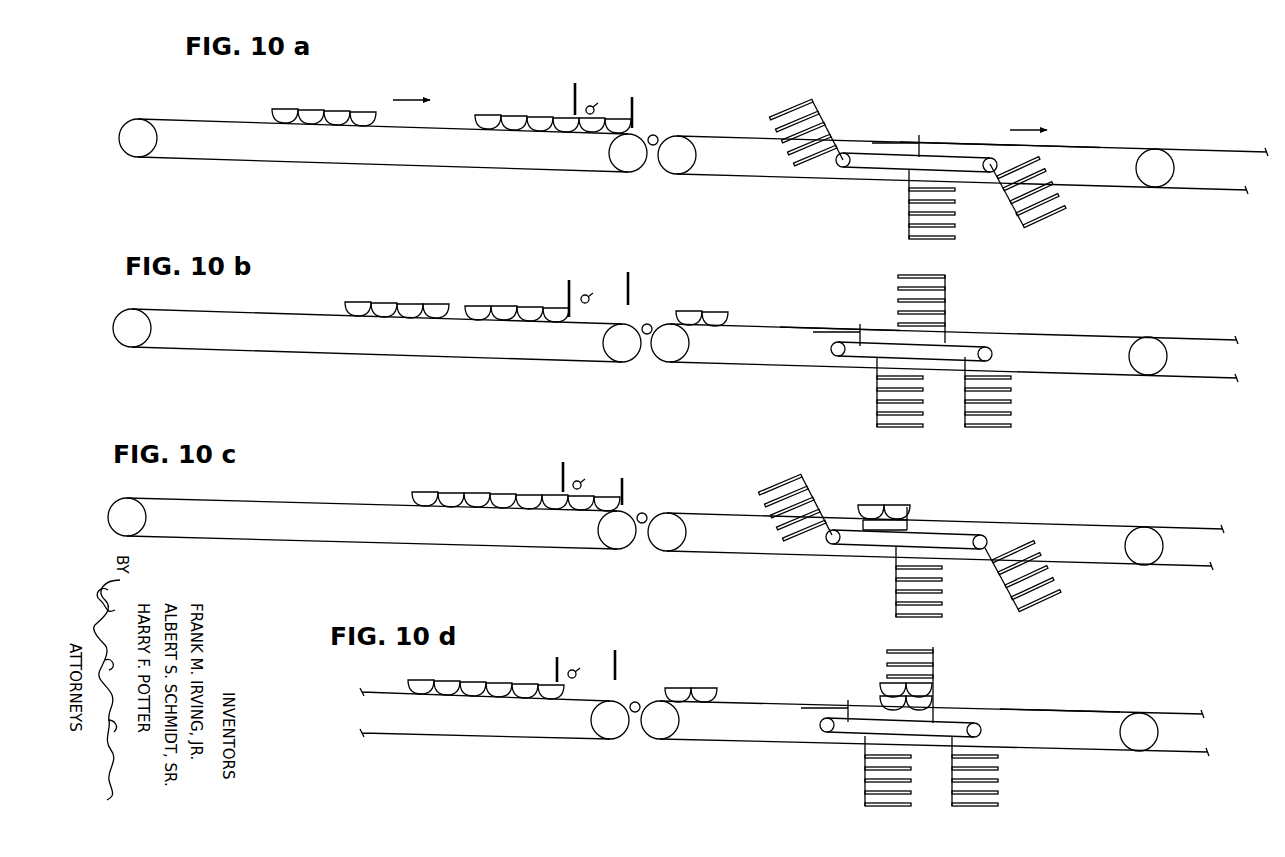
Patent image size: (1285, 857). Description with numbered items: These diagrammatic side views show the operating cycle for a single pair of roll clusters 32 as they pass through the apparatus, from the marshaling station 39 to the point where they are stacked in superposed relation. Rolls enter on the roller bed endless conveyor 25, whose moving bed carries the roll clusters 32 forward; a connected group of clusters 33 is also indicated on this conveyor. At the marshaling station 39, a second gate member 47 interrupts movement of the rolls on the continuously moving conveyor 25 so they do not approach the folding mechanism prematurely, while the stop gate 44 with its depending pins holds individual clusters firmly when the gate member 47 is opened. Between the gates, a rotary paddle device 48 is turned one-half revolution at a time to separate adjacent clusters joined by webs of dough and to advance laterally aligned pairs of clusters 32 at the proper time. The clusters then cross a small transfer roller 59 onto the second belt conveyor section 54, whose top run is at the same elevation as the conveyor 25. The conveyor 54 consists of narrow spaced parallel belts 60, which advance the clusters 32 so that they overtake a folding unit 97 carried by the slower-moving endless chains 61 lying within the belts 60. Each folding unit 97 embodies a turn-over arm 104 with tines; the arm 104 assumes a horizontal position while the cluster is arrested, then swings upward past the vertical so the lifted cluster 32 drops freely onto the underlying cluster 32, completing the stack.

In FIG. 10a, the roller bed endless conveyor 25 is at (218, 118).
In FIG. 10b, the roller bed endless conveyor 25 is at (252, 310).
In FIG. 10c, the roller bed endless conveyor 25 is at (298, 497).
In FIG. 10d, the roller bed endless conveyor 25 is at (494, 713).
In FIG. 10a, the roll cluster 32 is at (335, 107).
In FIG. 10b, the roll cluster 32 is at (718, 312).
In FIG. 10c, the roll cluster 32 is at (607, 496).
In FIG. 10d, the roll cluster 32 is at (520, 682).
In FIG. 10a, the row of containers 33 is at (305, 108).
In FIG. 10a, the marshaling station 39 is at (607, 91).
In FIG. 10a, the stop gate 44 is at (570, 95).
In FIG. 10b, the stop gate 44 is at (569, 290).
In FIG. 10c, the stop gate 44 is at (562, 468).
In FIG. 10d, the stop gate 44 is at (557, 665).
In FIG. 10a, the second gate member 47 is at (635, 109).
In FIG. 10b, the second gate member 47 is at (633, 288).
In FIG. 10c, the second gate member 47 is at (624, 485).
In FIG. 10d, the second gate member 47 is at (617, 660).
In FIG. 10a, the rotary paddle device 48 is at (593, 102).
In FIG. 10b, the rotary paddle device 48 is at (590, 298).
In FIG. 10c, the rotary paddle device 48 is at (578, 480).
In FIG. 10d, the rotary paddle device 48 is at (575, 672).
In FIG. 10a, the second belt conveyor section 54 is at (743, 134).
In FIG. 10b, the second belt conveyor section 54 is at (748, 325).
In FIG. 10c, the second belt conveyor section 54 is at (731, 510).
In FIG. 10d, the second belt conveyor section 54 is at (770, 703).
In FIG. 10a, the transfer roller 59 is at (656, 135).
In FIG. 10b, the transfer roller 59 is at (647, 329).
In FIG. 10c, the transfer roller 59 is at (642, 518).
In FIG. 10d, the transfer roller 59 is at (635, 707).
In FIG. 10a, the belts 60 is at (958, 140).
In FIG. 10b, the belts 60 is at (783, 327).
In FIG. 10d, the belts 60 is at (1060, 712).
In FIG. 10a, the endless chains 61 is at (860, 150).
In FIG. 10b, the endless chains 61 is at (968, 344).
In FIG. 10c, the endless chains 61 is at (960, 530).
In FIG. 10d, the endless chains 61 is at (960, 722).
In FIG. 10a, the folding unit 97 is at (819, 101).
In FIG. 10b, the folding unit 97 is at (830, 328).
In FIG. 10c, the folding unit 97 is at (818, 495).
In FIG. 10d, the folding unit 97 is at (820, 705).
In FIG. 10a, the turn-over arm 104 is at (805, 108).
In FIG. 10d, the turn-over arm 104 is at (898, 648).